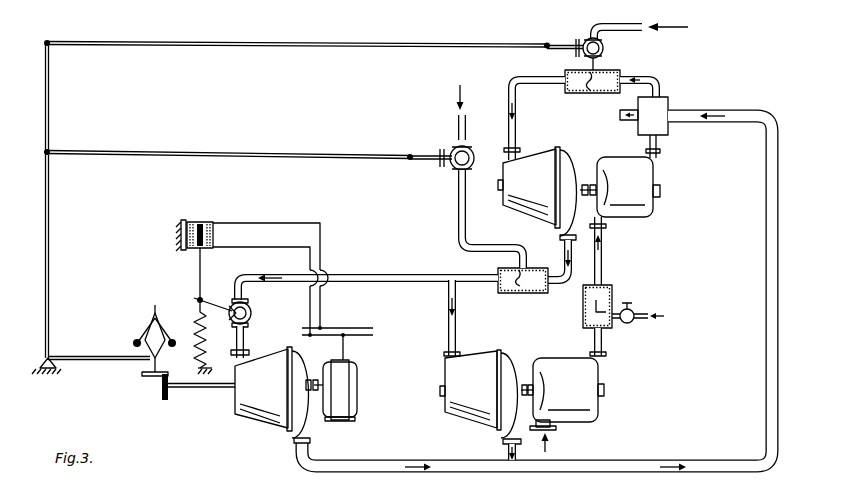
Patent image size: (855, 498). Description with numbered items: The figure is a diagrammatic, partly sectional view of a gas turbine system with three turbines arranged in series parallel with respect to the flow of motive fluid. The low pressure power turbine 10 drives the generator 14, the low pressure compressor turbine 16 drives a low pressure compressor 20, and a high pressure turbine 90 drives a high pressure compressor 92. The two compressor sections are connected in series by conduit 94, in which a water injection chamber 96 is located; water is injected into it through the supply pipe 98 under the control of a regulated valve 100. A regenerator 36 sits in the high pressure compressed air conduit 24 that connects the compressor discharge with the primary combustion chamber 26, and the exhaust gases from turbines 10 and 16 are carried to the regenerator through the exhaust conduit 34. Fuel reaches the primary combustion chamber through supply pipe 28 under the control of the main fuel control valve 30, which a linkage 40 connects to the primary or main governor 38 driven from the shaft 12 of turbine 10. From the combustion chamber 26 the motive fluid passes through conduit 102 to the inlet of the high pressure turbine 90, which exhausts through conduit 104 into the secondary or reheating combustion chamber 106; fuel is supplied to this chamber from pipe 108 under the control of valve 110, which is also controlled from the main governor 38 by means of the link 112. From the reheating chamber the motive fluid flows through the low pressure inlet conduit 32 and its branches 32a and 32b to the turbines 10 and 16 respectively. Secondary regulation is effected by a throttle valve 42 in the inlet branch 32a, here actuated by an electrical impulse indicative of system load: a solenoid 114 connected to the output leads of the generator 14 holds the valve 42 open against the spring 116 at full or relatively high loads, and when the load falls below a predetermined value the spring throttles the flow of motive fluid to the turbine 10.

The low pressure power turbine 10 is at (268, 428).
The shaft 12 is at (208, 390).
The generator 14 is at (350, 402).
The low pressure compressor turbine 16 is at (468, 420).
The low pressure compressor 20 is at (590, 378).
The high pressure compressed air conduit 24 is at (663, 69).
The primary combustion chamber 26 is at (596, 93).
The supply pipe 28 is at (626, 36).
The main fuel control valve 30 is at (604, 55).
The low pressure inlet conduit 32 is at (385, 276).
The inlet branch 32a is at (246, 340).
The inlet branch 32b is at (456, 325).
The exhaust conduit 34 is at (766, 263).
The regenerator 36 is at (660, 105).
The primary or main governor 38 is at (150, 327).
The linkage 40 is at (236, 48).
The throttle valve 42 is at (250, 308).
The high pressure turbine 90 is at (540, 160).
The high pressure compressor 92 is at (650, 176).
The conduit 94 is at (602, 258).
The water injection chamber 96 is at (612, 292).
The supply pipe 98 is at (648, 321).
The valve 100 is at (624, 324).
The conduit 102 is at (516, 78).
The conduit 104 is at (560, 255).
The secondary or reheating combustion chamber 106 is at (520, 294).
The pipe 108 is at (456, 127).
The valve 110 is at (452, 168).
The link 112 is at (272, 152).
The solenoid 114 is at (212, 221).
The spring 116 is at (190, 338).